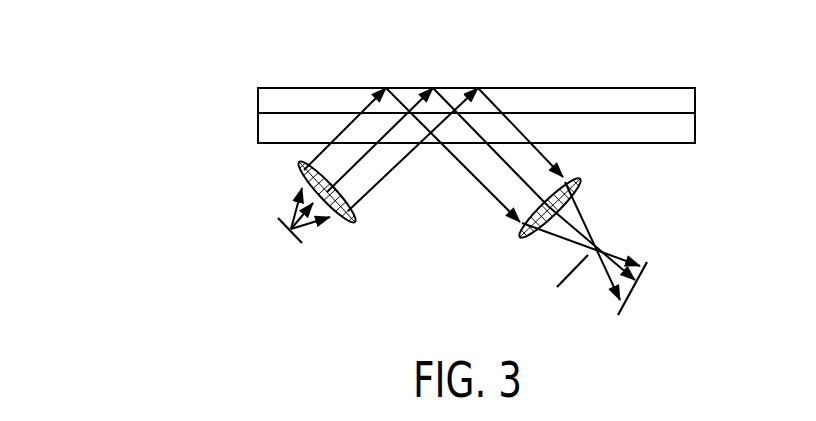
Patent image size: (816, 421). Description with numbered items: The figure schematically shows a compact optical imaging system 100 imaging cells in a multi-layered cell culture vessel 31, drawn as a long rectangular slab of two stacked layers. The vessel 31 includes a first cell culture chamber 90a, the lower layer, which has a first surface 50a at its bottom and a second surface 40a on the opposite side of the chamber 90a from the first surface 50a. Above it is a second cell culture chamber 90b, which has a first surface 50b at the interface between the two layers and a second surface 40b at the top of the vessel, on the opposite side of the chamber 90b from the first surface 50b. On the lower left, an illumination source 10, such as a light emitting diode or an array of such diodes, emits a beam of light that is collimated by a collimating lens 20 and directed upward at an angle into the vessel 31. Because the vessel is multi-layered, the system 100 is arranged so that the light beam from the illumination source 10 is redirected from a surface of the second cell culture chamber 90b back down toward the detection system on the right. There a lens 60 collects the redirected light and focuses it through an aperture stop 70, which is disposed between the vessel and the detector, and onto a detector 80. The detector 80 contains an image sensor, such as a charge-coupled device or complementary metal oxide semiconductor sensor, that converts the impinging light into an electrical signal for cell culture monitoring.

The compact optical imaging system 100 is at (155, 197).
The multi-layered cell culture vessel 31 is at (246, 107).
The illumination source 10 is at (296, 240).
The collimating lens 20 is at (300, 165).
The second surface of the first cell culture chamber 40a is at (677, 113).
The second surface of the second cell culture chamber 40b is at (605, 88).
The first surface of the first cell culture chamber 50a is at (587, 142).
The first surface of the second cell culture chamber 50b is at (285, 110).
The first cell culture chamber 90a is at (267, 125).
The second cell culture chamber 90b is at (548, 100).
The lens 60 is at (522, 233).
The aperture stop 70 is at (600, 242).
The detector 80 is at (638, 283).